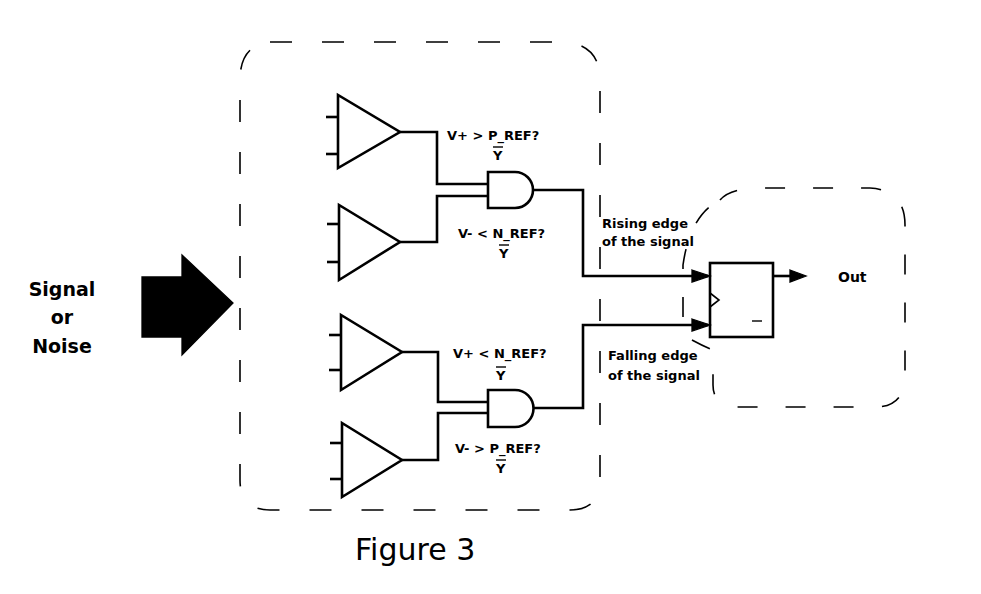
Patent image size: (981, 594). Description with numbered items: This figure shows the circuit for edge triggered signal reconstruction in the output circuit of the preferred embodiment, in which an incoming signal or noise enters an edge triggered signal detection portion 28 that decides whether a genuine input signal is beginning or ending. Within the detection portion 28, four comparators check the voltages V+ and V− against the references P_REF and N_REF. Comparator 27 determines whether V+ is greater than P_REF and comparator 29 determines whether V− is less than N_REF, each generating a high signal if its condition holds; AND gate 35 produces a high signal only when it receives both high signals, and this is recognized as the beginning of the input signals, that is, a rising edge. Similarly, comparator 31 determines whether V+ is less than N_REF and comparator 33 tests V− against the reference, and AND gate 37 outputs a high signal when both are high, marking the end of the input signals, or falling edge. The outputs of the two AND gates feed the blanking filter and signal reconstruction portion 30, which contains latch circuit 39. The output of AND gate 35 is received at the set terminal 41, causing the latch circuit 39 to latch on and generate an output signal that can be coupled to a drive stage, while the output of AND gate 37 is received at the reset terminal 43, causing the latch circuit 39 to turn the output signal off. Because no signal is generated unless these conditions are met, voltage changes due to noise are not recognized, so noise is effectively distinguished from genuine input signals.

The comparator 27 is at (367, 122).
The edge triggered signal detection portion 28 is at (583, 75).
The comparator 29 is at (365, 238).
The blanking filter and signal reconstruction portion 30 is at (767, 395).
The comparator 31 is at (368, 343).
The comparator 33 is at (370, 450).
The AND gate 35 is at (513, 185).
The AND gate 37 is at (515, 405).
The latch circuit 39 is at (757, 262).
The set terminal 41 is at (726, 262).
The reset terminal 43 is at (722, 337).